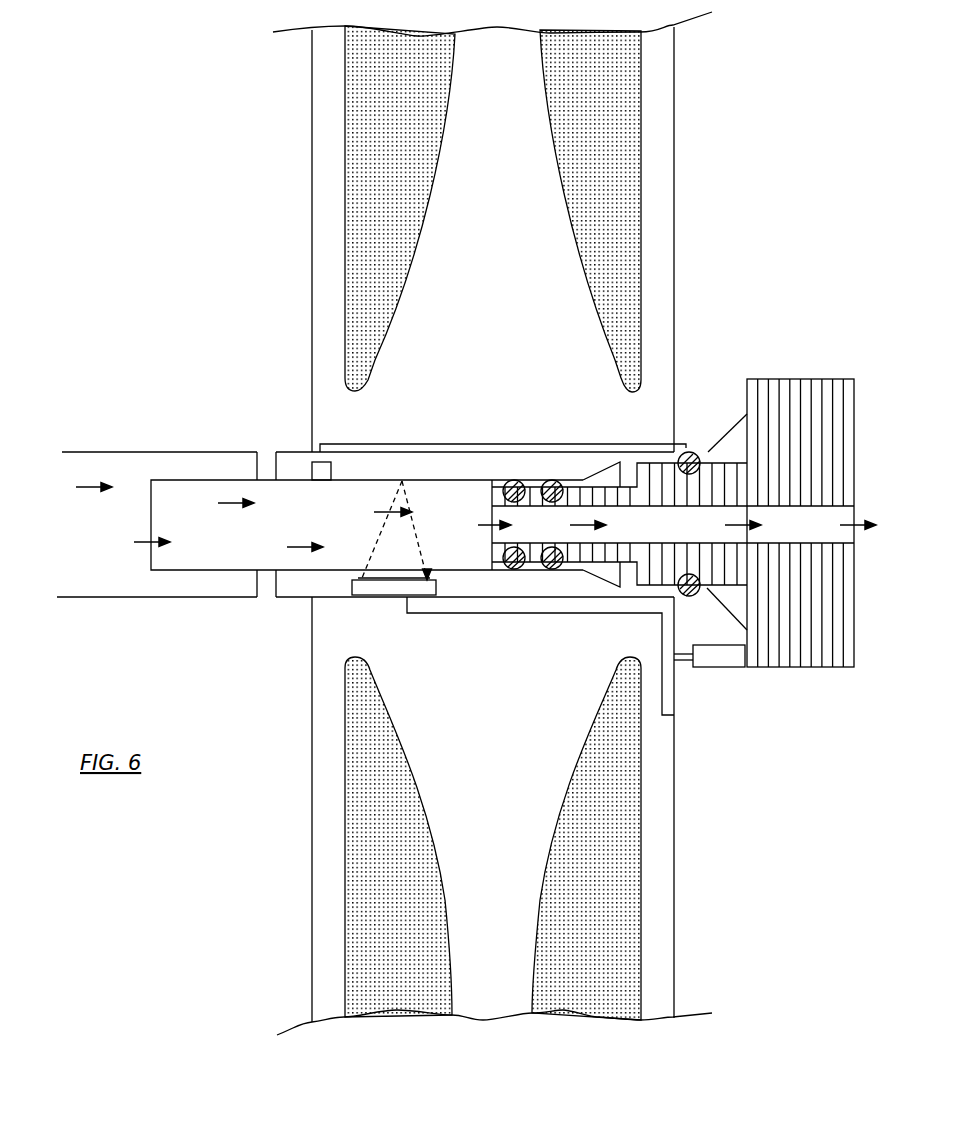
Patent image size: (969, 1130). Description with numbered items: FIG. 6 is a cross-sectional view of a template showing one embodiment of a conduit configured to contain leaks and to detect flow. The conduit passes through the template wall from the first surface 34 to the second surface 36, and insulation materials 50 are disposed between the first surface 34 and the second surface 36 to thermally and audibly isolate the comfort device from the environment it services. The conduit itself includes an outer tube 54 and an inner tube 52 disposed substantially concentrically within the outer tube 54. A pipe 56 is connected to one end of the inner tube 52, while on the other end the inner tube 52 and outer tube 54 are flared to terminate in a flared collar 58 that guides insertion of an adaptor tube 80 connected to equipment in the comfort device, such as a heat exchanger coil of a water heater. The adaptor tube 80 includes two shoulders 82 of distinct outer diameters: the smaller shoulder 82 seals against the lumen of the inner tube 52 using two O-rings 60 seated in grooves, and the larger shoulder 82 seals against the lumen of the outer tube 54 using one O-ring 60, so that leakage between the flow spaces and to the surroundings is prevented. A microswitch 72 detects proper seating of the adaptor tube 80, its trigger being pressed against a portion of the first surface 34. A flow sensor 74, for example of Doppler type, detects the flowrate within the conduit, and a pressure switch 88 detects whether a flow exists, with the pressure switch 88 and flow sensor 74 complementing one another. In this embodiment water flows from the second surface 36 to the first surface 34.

The first surface 34 is at (674, 90).
The second surface 36 is at (312, 80).
The insulation materials 50 is at (345, 247).
The inner tube 52 is at (266, 478).
The outer tube 54 is at (283, 452).
The pipe 56 is at (137, 452).
The flared collar 58 is at (585, 480).
The O-rings 60 is at (547, 484).
The microswitch 72 is at (725, 667).
The flow sensor 74 is at (352, 583).
The adaptor tube 80 is at (802, 380).
The shoulders 82 is at (709, 452).
The pressure switch 88 is at (313, 462).